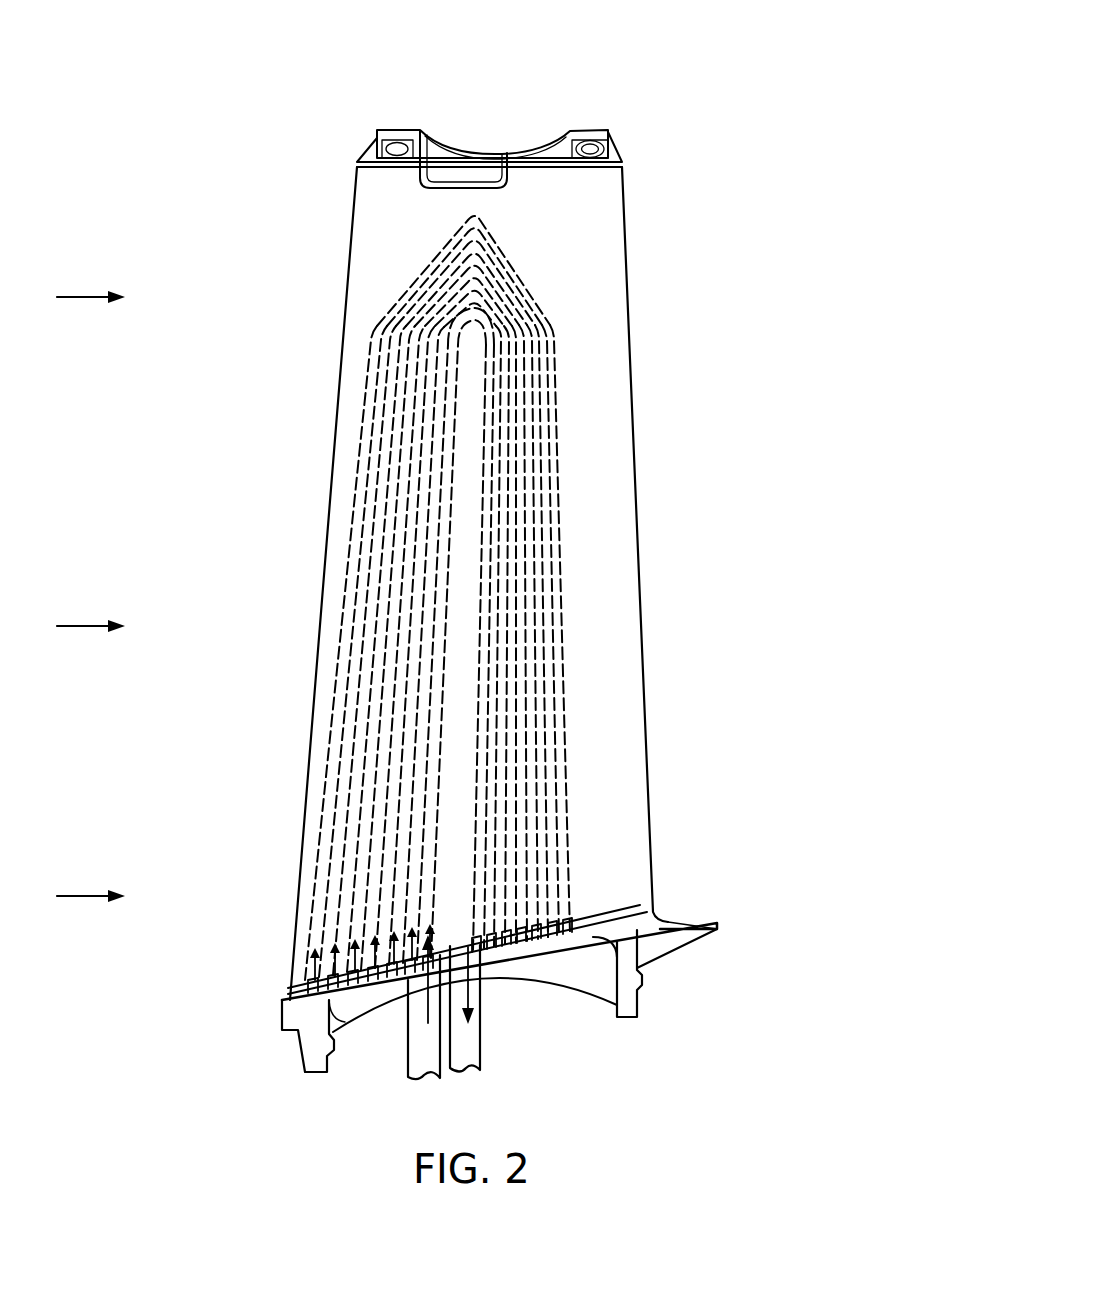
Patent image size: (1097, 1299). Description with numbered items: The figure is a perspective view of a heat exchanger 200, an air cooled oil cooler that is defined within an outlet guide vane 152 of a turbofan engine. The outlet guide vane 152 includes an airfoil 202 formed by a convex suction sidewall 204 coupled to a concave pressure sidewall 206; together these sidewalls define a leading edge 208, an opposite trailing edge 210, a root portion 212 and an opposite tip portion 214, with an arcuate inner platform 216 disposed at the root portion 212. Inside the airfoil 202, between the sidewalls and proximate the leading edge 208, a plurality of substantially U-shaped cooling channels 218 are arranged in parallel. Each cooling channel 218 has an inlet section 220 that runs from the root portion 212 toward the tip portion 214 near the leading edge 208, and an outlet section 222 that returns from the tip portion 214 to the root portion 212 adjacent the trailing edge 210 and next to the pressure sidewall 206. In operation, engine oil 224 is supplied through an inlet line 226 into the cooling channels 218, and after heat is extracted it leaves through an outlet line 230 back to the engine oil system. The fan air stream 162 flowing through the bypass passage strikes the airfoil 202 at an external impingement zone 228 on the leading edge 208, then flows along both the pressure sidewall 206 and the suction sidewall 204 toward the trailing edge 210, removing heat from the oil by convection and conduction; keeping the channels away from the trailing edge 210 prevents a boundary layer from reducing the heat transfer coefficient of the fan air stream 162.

The heat exchanger 200 is at (855, 45).
The outlet guide vane 152 is at (695, 108).
The airfoil 202 is at (603, 210).
The convex suction sidewall 204 is at (638, 835).
The concave pressure sidewall 206 is at (300, 900).
The leading edge 208 is at (350, 258).
The trailing edge 210 is at (633, 300).
The root portion 212 is at (590, 920).
The tip portion 214 is at (510, 160).
The arcuate inner platform 216 is at (557, 965).
The cooling channels 218 is at (580, 530).
The inlet section 220 is at (337, 704).
The outlet section 222 is at (568, 742).
The engine oil 224 is at (425, 1003).
The inlet line 226 is at (410, 1050).
The impingement zone 228 is at (355, 326).
The outlet line 230 is at (478, 1055).
The fan air stream 162 is at (70, 295).